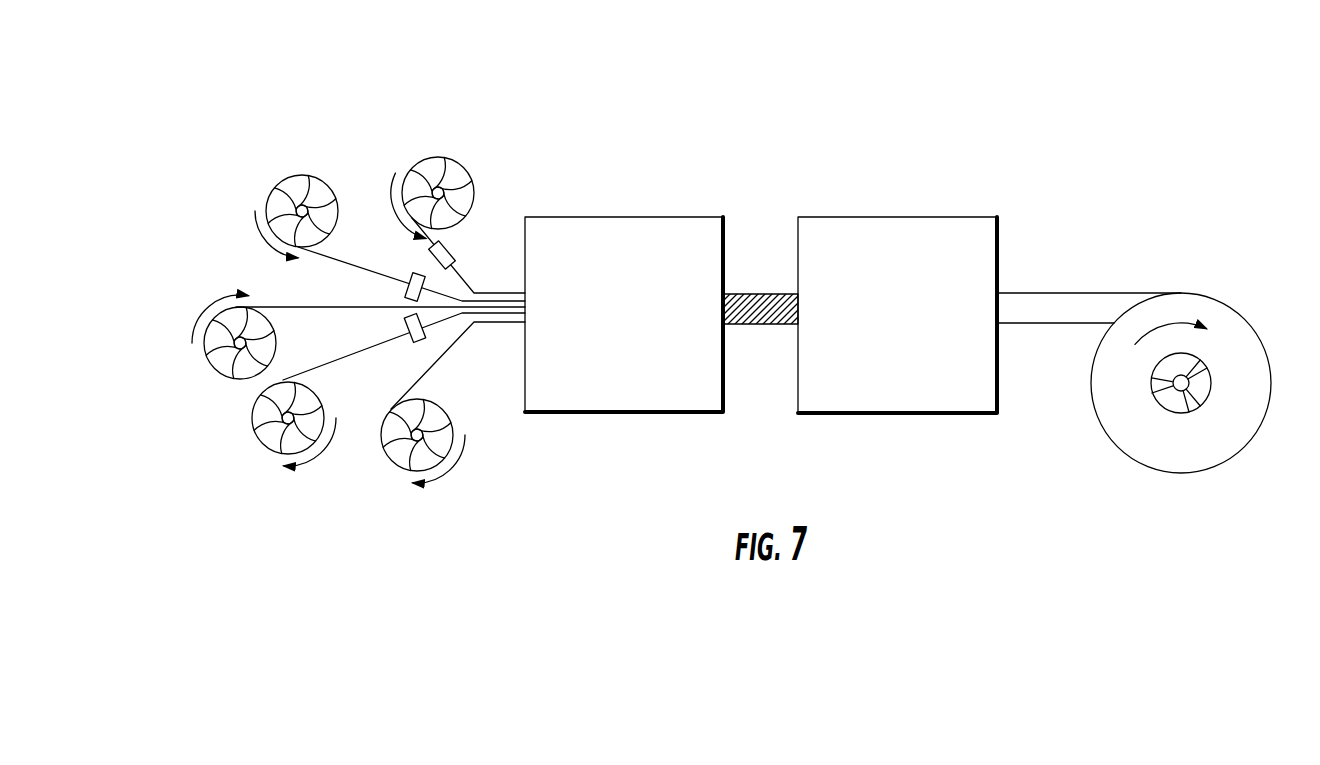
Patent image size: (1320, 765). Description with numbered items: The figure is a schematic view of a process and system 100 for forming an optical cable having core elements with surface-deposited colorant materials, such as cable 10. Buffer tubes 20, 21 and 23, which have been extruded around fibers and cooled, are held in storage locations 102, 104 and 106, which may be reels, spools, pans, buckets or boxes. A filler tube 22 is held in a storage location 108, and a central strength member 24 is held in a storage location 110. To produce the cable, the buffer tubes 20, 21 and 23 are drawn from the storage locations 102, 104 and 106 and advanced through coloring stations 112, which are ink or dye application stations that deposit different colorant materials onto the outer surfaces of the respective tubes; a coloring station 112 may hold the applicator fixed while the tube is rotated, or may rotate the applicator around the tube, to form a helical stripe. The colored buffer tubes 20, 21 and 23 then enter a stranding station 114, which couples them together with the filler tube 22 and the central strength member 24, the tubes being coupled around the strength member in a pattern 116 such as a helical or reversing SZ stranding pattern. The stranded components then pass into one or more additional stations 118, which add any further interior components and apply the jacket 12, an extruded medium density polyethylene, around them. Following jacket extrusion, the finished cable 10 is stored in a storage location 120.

The process and system 100 is at (746, 100).
The storage location 102 is at (435, 158).
The storage location 104 is at (302, 175).
The storage location 106 is at (260, 443).
The storage location 108 is at (395, 470).
The storage location 110 is at (213, 370).
The coloring stations 112 is at (430, 257).
The stranding station 114 is at (688, 273).
The pattern 116 is at (747, 330).
The additional stations 118 is at (973, 273).
The storage location 120 is at (1225, 348).
The cable 10 is at (1112, 293).
The jacket 12 is at (1055, 307).
The buffer tube 20 is at (478, 291).
The buffer tube 21 is at (352, 265).
The filler tube 22 is at (487, 327).
The buffer tube 23 is at (335, 362).
The central strength member 24 is at (277, 307).